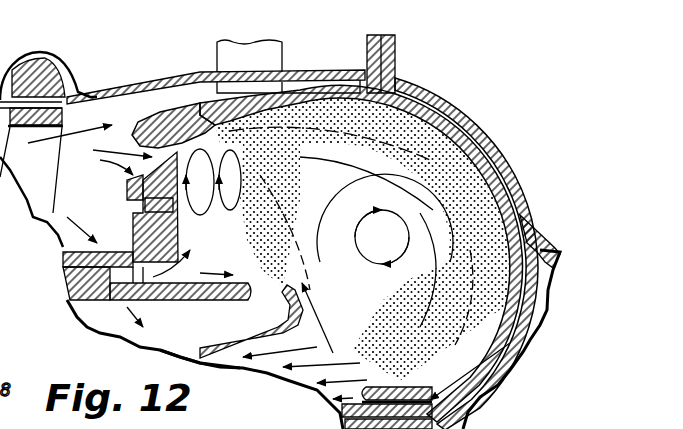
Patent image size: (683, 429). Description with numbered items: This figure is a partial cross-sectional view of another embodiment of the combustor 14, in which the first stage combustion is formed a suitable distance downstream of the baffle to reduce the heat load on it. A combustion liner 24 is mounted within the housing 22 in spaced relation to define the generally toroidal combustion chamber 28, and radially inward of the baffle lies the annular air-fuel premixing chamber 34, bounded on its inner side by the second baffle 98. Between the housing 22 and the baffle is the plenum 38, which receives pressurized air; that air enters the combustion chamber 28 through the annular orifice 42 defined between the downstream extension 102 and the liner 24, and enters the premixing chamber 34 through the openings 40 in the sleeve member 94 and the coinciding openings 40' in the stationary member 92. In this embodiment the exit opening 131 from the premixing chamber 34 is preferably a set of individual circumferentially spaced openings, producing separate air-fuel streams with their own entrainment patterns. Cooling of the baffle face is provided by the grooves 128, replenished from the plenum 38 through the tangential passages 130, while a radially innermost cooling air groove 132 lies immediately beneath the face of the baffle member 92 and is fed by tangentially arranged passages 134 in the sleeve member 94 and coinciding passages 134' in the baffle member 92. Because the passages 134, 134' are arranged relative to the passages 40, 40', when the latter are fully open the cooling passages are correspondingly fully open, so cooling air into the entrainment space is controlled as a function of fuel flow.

The combustor 14 is at (452, 75).
The housing 22 is at (173, 82).
The combustion liner 24 is at (487, 133).
The combustion chamber 28 is at (480, 342).
The air-fuel premixing chamber 34 is at (143, 330).
The plenum 38 is at (113, 117).
The openings in the sleeve member 40 is at (31, 187).
The openings in the stationary member 40' is at (113, 333).
The annular orifice 42 is at (173, 127).
The stationary member 92 is at (80, 292).
The sleeve member 94 is at (63, 255).
The second baffle 98 is at (182, 357).
The downstream extension 102 is at (132, 188).
The grooves 128 is at (213, 182).
The passages 130 is at (115, 172).
The exit opening 131 is at (278, 290).
The radially innermost cooling air groove 132 is at (147, 297).
The tangentially arranged passages in the sleeve member 134 is at (140, 207).
The coinciding passages in the baffle member 134' is at (167, 305).